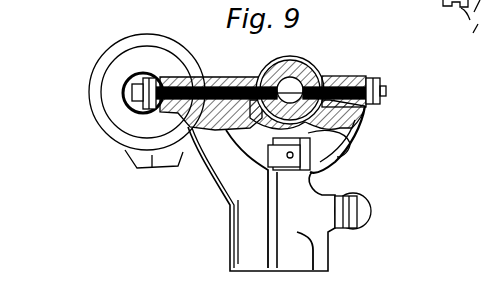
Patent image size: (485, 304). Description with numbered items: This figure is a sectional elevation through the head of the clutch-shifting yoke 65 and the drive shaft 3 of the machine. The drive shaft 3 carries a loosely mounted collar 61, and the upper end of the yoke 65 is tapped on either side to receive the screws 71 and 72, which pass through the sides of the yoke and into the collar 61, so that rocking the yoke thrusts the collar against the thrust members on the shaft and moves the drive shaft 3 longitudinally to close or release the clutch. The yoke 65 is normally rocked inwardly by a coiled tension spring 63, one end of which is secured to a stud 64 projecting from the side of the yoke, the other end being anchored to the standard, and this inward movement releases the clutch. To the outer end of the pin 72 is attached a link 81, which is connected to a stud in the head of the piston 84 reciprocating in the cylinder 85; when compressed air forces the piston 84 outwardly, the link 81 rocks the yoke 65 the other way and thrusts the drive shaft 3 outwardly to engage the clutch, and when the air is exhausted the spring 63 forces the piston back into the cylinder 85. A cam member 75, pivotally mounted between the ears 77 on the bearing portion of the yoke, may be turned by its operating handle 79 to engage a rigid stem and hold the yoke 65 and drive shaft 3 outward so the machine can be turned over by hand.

The drive shaft 3 is at (280, 67).
The collar 61 is at (292, 66).
The coiled tension spring 63 is at (372, 208).
The stud 64 is at (372, 220).
The yoke 65 is at (238, 245).
The screw 71 is at (346, 76).
The screw 72 is at (215, 77).
The cam member 75 is at (338, 152).
The ears 77 is at (352, 122).
The operating handle 79 is at (335, 170).
The link 81 is at (136, 108).
The piston 84 is at (118, 100).
The cylinder 85 is at (96, 72).